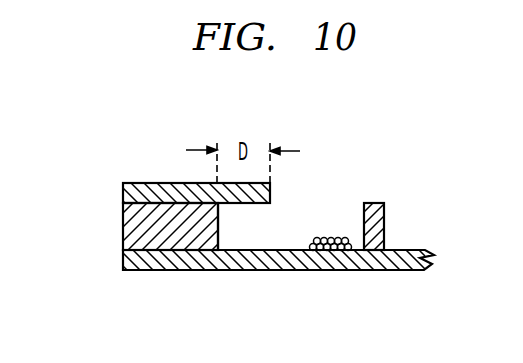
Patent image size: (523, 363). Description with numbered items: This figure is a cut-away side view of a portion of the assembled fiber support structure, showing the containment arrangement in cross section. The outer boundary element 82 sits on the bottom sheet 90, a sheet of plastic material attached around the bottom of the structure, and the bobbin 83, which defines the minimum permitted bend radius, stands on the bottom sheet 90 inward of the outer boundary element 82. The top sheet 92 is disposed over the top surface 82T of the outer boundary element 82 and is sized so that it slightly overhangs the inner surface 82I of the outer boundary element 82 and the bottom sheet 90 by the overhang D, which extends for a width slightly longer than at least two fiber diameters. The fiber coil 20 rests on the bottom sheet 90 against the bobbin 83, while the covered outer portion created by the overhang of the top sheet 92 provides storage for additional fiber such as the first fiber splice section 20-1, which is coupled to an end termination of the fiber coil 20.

The top sheet 92 is at (180, 183).
The outer boundary element 82 is at (130, 224).
The top surface of outer boundary element 82T is at (128, 204).
The inner surface of outer boundary element 82I is at (218, 232).
The bottom sheet 90 is at (368, 255).
The first fiber splice section 20-1 is at (280, 250).
The bobbin 83 is at (378, 230).
The fiber coil 20 is at (332, 238).